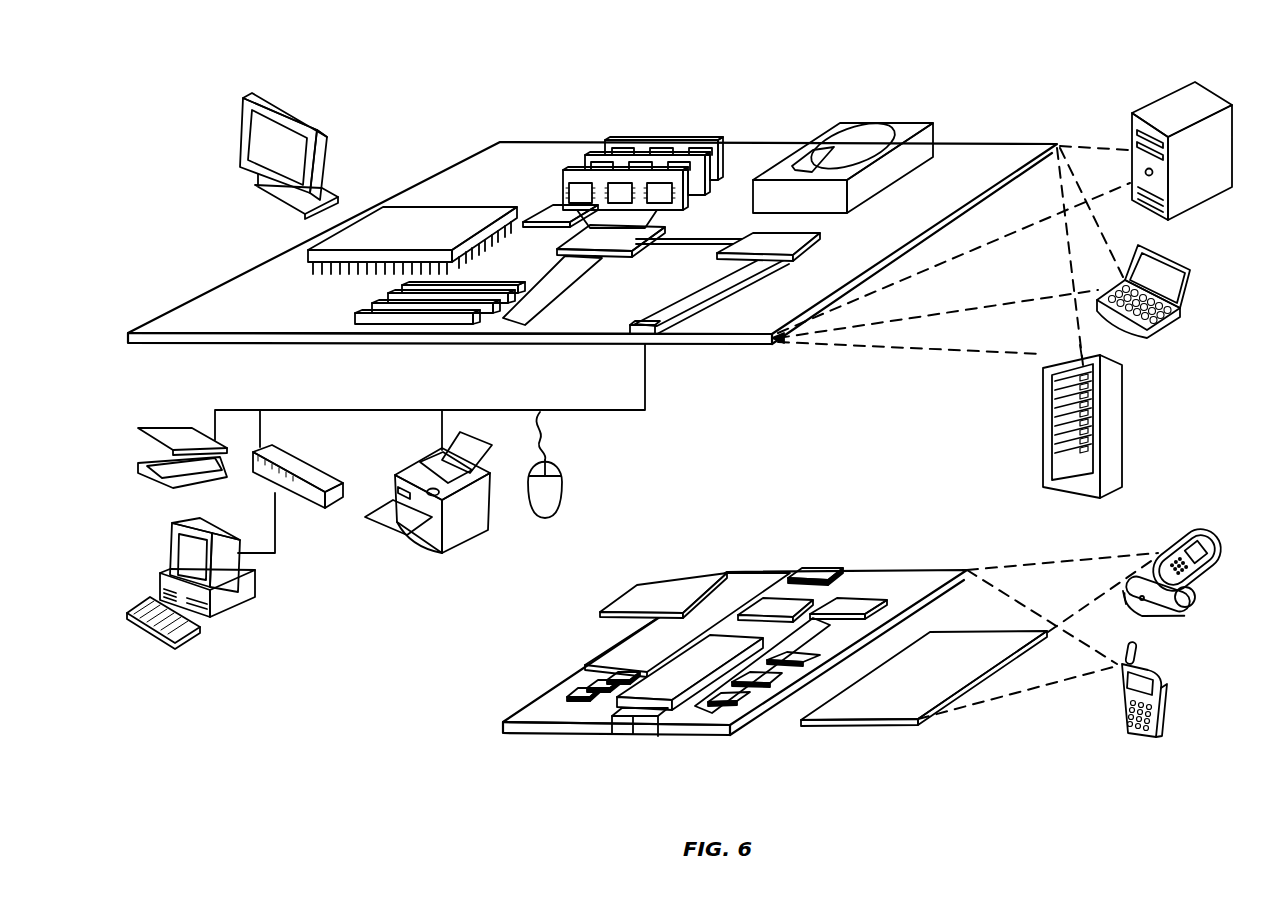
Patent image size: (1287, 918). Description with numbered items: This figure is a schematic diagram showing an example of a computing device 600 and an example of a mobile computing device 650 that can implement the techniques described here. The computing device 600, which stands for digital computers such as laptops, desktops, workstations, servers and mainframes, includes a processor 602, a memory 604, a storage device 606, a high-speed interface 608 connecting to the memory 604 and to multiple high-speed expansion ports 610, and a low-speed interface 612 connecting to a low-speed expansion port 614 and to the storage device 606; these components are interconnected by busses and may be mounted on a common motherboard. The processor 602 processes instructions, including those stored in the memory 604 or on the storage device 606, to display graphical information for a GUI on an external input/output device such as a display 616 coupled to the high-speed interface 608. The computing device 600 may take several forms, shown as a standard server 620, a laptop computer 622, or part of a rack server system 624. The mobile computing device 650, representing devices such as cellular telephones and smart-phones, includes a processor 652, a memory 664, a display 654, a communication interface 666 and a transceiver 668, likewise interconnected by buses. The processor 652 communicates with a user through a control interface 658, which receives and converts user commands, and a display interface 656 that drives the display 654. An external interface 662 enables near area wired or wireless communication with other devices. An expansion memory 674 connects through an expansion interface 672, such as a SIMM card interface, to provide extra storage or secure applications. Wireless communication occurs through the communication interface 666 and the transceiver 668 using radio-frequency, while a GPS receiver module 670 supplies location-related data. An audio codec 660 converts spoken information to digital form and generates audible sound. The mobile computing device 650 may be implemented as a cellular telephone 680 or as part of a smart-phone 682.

The computing device 600 is at (424, 119).
The processor 602 is at (308, 254).
The memory 604 is at (624, 152).
The storage device 606 is at (850, 130).
The high-speed interface 608 is at (590, 240).
The high-speed expansion ports 610 is at (378, 308).
The low-speed interface 612 is at (750, 243).
The low-speed expansion port 614 is at (648, 338).
The display 616 is at (247, 96).
The standard server 620 is at (1130, 129).
The laptop computer 622 is at (1190, 270).
The rack server system 624 is at (1045, 452).
The mobile computing device 650 is at (477, 730).
The processor 652 is at (667, 690).
The display 654 is at (887, 707).
The display interface 656 is at (735, 698).
The control interface 658 is at (762, 677).
The audio codec 660 is at (787, 657).
The external interface 662 is at (630, 722).
The memory 664 is at (588, 692).
The communication interface 666 is at (778, 612).
The transceiver 668 is at (850, 610).
The GPS receiver module 670 is at (828, 575).
The expansion interface 672 is at (713, 597).
The expansion memory 674 is at (643, 598).
The cellular telephone 680 is at (1175, 533).
The smart-phone 682 is at (1123, 696).